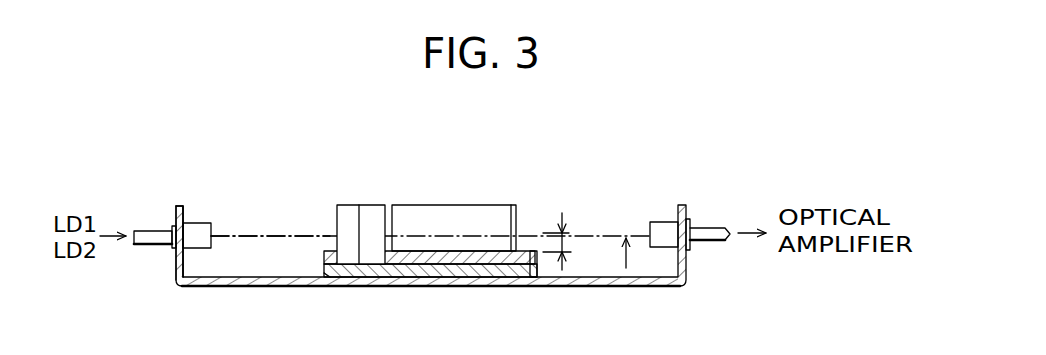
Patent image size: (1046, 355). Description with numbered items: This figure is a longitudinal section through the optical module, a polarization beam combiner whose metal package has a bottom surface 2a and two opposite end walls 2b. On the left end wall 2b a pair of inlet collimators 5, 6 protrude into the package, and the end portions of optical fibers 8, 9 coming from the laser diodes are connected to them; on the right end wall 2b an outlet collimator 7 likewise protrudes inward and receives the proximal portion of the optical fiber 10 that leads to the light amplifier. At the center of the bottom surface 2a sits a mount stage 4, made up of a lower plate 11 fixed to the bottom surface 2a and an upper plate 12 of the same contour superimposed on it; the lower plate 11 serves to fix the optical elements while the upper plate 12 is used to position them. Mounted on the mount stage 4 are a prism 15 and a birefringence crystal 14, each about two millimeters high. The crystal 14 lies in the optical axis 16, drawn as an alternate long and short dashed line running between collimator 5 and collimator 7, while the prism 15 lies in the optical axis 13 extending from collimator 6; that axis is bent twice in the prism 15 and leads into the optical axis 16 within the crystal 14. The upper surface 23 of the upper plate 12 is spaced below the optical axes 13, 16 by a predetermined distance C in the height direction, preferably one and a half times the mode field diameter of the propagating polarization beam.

The bottom surface 2a is at (249, 276).
The end wall 2b is at (177, 267).
The mount stage 4 is at (321, 270).
The inlet collimator 5 is at (198, 228).
The inlet collimator 6 is at (200, 192).
The outlet collimator 7 is at (663, 228).
The optical fiber 8 is at (152, 231).
The optical fiber 9 is at (149, 204).
The optical fiber 10 is at (707, 232).
The lower plate 11 is at (473, 258).
The upper plate 12 is at (420, 266).
The optical axis 13 is at (282, 232).
The birefringence crystal 14 is at (450, 212).
The prism 15 is at (372, 212).
The optical axis 16 is at (611, 230).
The upper surface 23 is at (536, 250).
The predetermined distance C is at (564, 241).